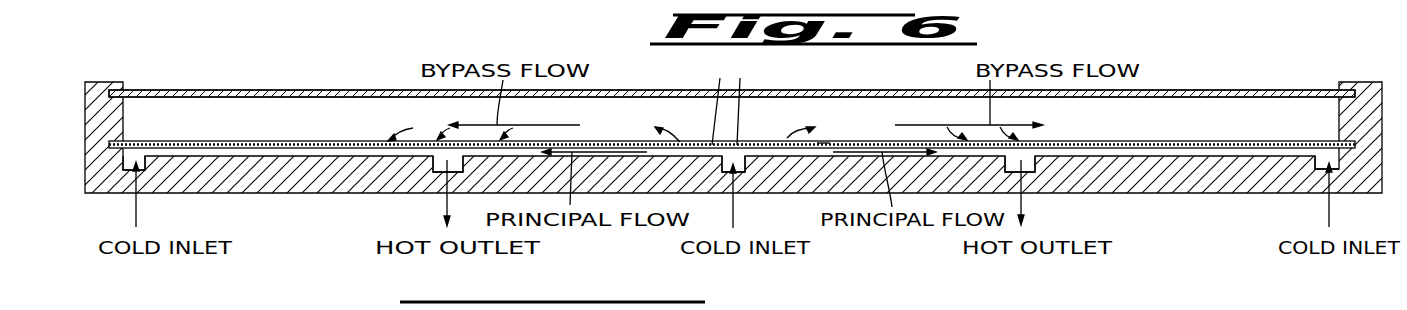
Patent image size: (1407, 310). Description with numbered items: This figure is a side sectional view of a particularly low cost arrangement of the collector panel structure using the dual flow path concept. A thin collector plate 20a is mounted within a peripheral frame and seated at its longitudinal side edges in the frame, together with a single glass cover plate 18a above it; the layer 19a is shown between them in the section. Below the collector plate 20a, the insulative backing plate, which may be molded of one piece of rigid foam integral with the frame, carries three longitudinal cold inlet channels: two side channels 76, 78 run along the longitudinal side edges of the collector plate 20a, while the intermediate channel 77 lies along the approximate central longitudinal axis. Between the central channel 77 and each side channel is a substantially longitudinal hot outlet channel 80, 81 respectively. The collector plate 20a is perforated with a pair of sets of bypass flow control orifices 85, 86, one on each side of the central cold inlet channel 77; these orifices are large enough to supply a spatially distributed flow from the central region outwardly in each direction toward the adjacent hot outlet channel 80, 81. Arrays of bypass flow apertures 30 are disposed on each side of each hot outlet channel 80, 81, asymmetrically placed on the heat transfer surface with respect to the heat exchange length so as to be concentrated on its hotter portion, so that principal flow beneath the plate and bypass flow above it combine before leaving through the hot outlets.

The glass cover plate 18a is at (1368, 102).
The upper plate 19a is at (1288, 97).
The collector plate 20a is at (1193, 142).
The bypass flow apertures 30 is at (383, 142).
The longitudinal channel 76 is at (147, 162).
The intermediate channel 77 is at (737, 160).
The longitudinal channel 78 is at (1316, 163).
The hot outlet channel 80 is at (428, 160).
The hot outlet channel 81 is at (1037, 163).
The bypass flow control orifices 85 is at (728, 99).
The bypass flow control orifices 86 is at (817, 143).